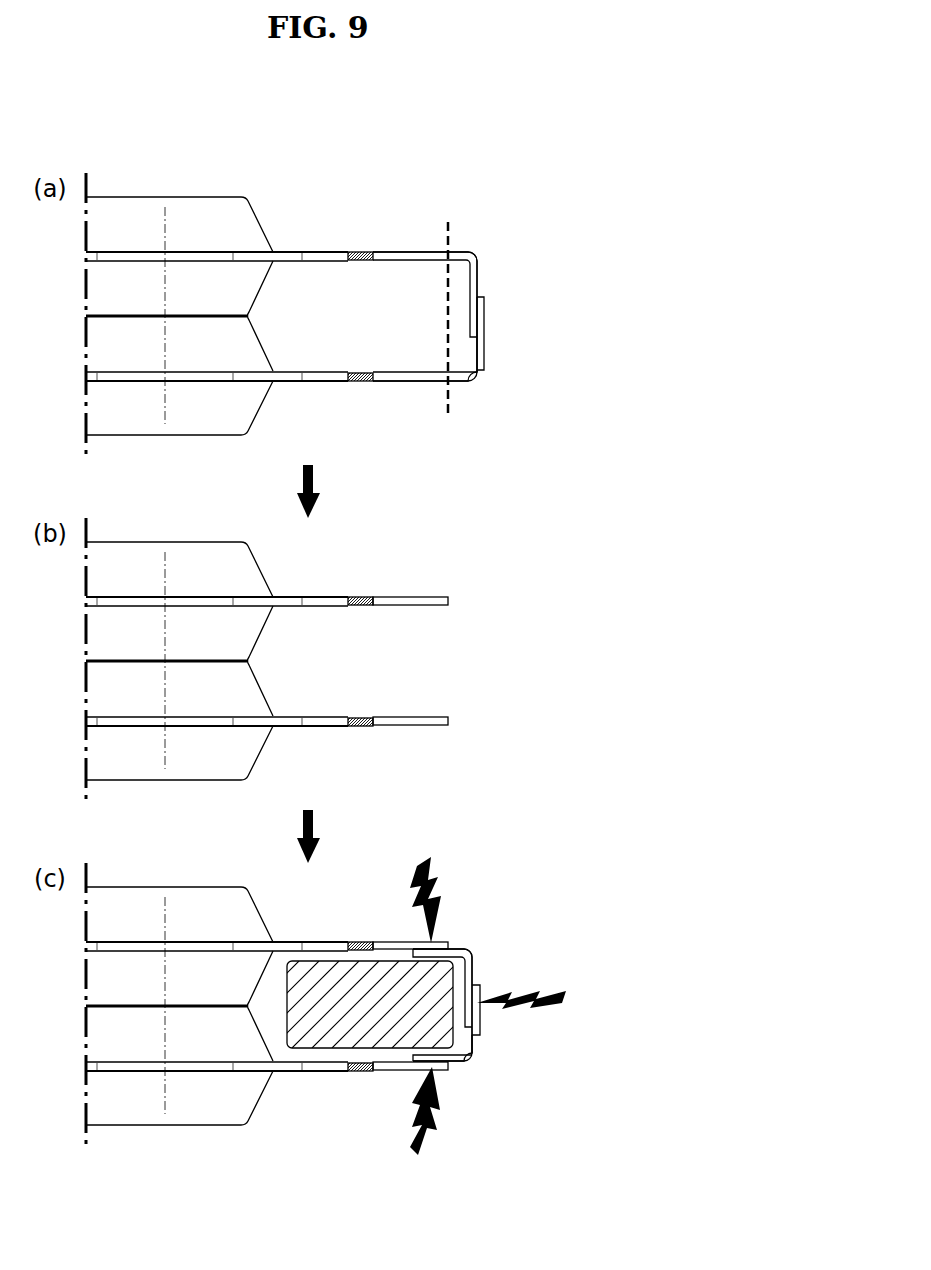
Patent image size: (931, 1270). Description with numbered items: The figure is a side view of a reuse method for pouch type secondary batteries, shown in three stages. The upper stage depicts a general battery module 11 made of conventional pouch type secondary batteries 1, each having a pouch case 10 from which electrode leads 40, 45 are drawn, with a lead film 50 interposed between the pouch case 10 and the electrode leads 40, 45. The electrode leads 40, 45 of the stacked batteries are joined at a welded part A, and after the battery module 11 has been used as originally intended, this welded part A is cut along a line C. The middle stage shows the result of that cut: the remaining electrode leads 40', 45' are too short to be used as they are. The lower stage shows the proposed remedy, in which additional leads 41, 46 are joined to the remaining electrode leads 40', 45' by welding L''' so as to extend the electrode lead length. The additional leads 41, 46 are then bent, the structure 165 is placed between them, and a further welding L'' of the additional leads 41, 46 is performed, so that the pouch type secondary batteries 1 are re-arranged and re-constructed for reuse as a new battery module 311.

The pouch type secondary battery 1 is at (68, 284).
The pouch case 10 is at (205, 197).
The battery module 11 is at (498, 153).
The electrode lead 40 is at (425, 295).
The electrode lead 45 is at (425, 359).
The lead film 50 is at (358, 252).
The welded part A is at (505, 312).
The cutting line C is at (448, 330).
The remaining electrode lead 40' is at (410, 756).
The remaining electrode lead 45' is at (410, 913).
The new battery module 311 is at (499, 876).
The additional lead 41 is at (467, 950).
The additional lead 46 is at (467, 1061).
The structure 165 is at (320, 1039).
The welding L'' is at (533, 982).
The welding L''' is at (419, 1006).